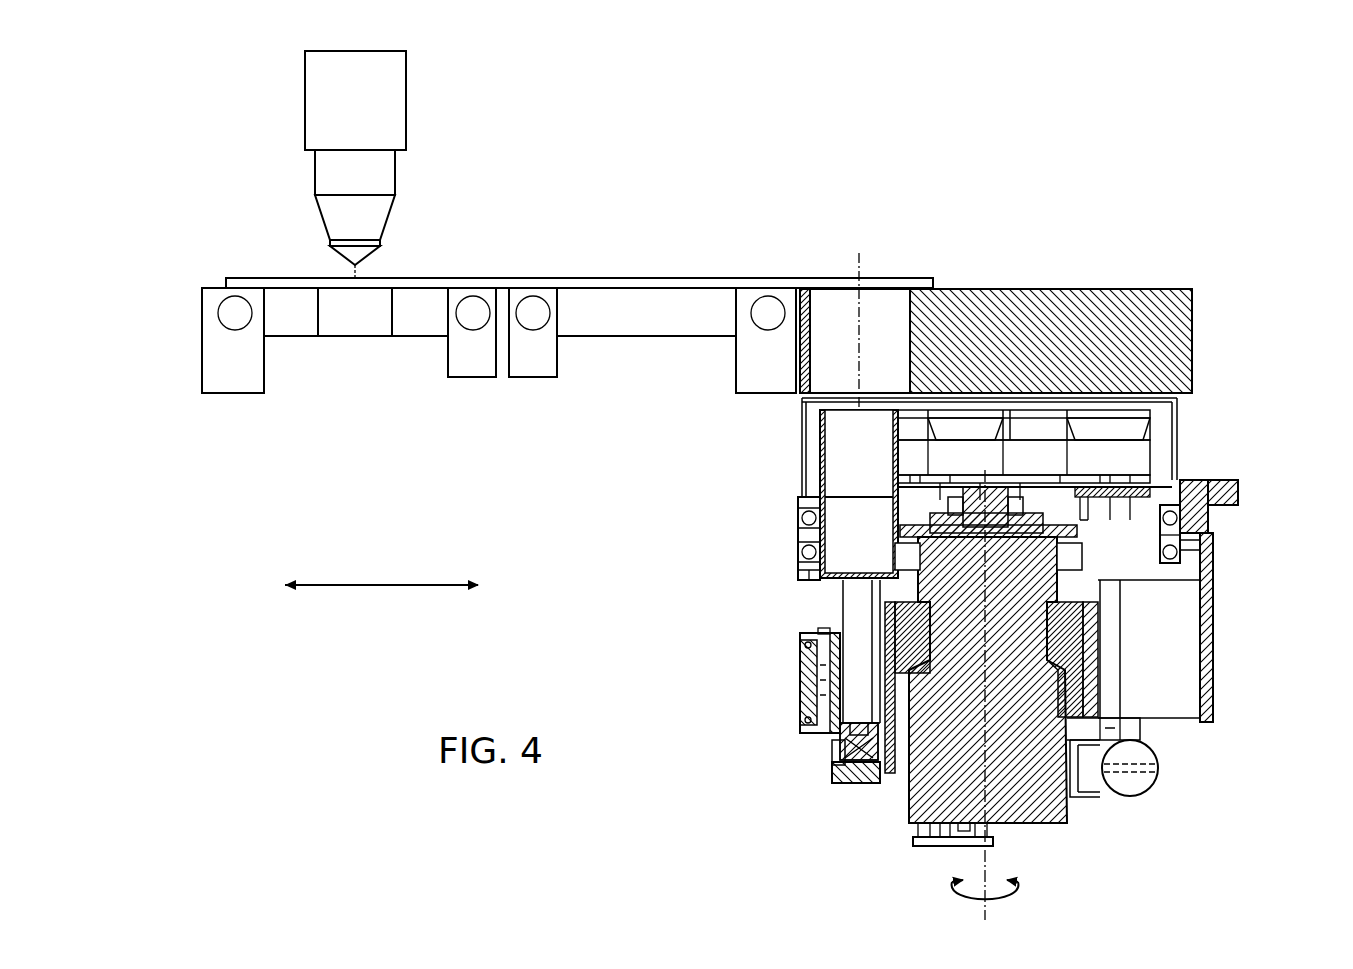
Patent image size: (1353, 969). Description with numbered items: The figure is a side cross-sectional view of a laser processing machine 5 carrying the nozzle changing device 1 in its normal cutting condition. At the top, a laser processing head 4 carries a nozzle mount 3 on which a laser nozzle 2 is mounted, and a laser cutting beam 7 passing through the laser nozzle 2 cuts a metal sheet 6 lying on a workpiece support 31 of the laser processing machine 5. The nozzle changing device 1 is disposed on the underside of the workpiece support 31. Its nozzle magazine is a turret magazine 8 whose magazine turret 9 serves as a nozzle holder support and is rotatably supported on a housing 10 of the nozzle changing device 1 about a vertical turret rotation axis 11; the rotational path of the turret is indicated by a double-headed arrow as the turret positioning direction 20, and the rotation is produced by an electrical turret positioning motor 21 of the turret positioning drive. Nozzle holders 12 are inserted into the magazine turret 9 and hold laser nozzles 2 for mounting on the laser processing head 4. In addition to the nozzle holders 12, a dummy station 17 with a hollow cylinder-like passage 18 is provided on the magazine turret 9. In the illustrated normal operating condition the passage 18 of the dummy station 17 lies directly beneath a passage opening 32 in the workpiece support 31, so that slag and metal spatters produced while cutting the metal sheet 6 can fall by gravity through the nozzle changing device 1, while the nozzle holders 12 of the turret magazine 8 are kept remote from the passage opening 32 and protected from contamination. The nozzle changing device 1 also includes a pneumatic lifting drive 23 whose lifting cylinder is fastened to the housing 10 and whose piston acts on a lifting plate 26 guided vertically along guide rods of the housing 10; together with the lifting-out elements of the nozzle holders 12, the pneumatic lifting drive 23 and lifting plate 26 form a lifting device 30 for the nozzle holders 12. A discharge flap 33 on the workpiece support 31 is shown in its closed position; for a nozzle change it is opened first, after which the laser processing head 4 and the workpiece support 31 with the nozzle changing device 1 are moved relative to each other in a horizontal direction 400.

The nozzle changing device 1 is at (790, 628).
The laser nozzle 2 is at (345, 262).
The nozzle mount 3 is at (323, 220).
The laser processing head 4 is at (288, 102).
The laser processing machine 5 is at (523, 190).
The metal sheet 6 is at (704, 283).
The laser cutting beam 7 is at (365, 272).
The turret magazine 8 is at (1158, 435).
The magazine turret 9 is at (1207, 537).
The housing 10 is at (1215, 573).
The turret rotation axis 11 is at (985, 862).
The nozzle holder 12 is at (1137, 417).
The dummy station 17 is at (817, 453).
The hollow cylinder-like passage 18 is at (840, 548).
The turret positioning direction 20 is at (1017, 893).
The turret positioning motor 21 is at (1050, 813).
The pneumatic lifting drive 23 is at (825, 743).
The lifting plate 26 is at (835, 758).
The lifting device 30 is at (859, 741).
The workpiece support 31 is at (1055, 280).
The passage opening 32 is at (878, 317).
The discharge flap 33 is at (475, 362).
The horizontal direction 400 is at (370, 587).